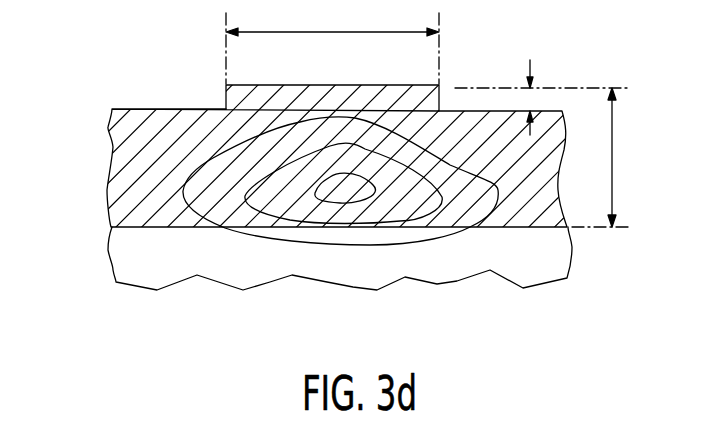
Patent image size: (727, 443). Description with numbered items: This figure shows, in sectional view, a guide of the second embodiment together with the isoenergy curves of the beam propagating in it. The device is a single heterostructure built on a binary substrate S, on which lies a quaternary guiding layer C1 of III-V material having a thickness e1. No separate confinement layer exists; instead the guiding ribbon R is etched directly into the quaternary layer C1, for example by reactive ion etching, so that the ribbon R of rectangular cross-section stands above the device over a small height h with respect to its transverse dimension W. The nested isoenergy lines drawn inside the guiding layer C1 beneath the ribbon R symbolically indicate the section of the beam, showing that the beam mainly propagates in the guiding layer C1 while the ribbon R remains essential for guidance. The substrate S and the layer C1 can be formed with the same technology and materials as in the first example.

The guiding layer C1 is at (129, 147).
The ribbon R is at (440, 87).
The substrate S is at (124, 252).
The transverse dimension W is at (332, 42).
The height h is at (528, 102).
The thickness e1 is at (605, 157).